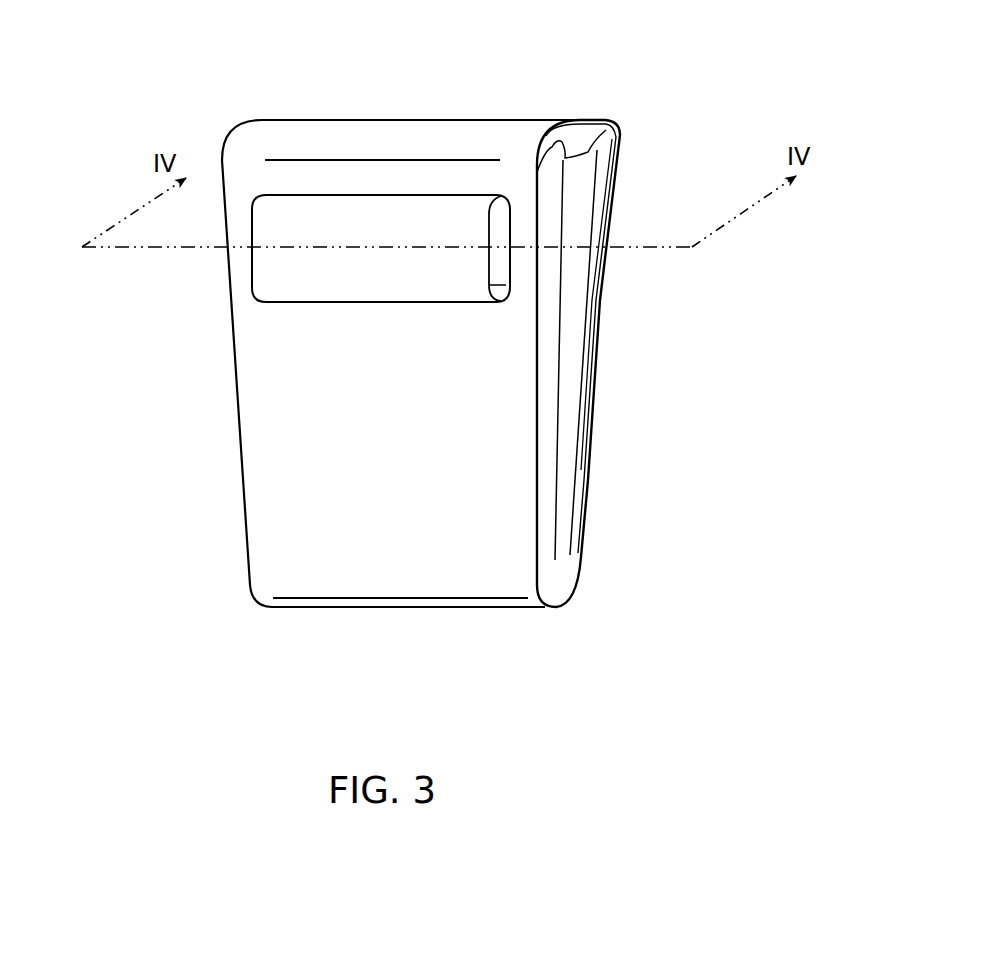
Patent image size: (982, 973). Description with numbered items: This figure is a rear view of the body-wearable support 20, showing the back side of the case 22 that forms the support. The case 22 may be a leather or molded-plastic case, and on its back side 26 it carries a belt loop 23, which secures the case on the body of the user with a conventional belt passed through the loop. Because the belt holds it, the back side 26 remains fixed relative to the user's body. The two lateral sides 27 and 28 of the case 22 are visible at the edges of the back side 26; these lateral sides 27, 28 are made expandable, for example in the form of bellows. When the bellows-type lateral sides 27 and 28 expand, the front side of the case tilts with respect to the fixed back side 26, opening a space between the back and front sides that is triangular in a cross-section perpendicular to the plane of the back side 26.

The body-wearable support 20 is at (226, 532).
The case 22 is at (623, 132).
The belt loop 23 is at (482, 205).
The back side 26 is at (440, 353).
The lateral side 27 is at (577, 308).
The lateral side 28 is at (229, 315).